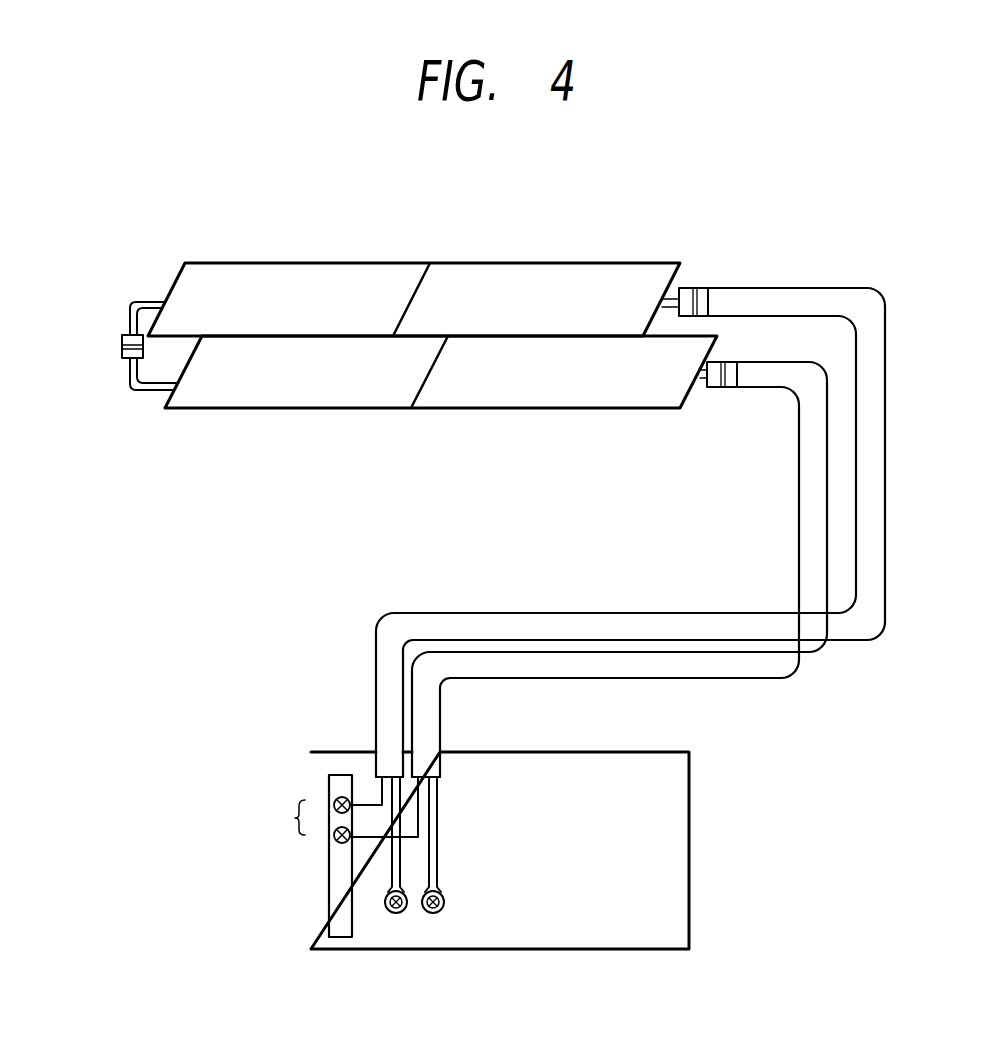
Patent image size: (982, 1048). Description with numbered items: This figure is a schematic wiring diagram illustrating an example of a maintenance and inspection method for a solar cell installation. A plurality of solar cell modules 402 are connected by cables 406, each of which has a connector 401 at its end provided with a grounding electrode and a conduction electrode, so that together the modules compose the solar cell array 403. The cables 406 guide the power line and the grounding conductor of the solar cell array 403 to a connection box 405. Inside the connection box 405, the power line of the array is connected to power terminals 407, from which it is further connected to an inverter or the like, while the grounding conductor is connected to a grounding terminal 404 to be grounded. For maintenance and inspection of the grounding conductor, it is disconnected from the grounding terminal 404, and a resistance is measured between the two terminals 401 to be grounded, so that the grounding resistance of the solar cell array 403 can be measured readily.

The connector 401 is at (122, 342).
The solar cell module 402 is at (480, 263).
The solar cell array 403 is at (415, 457).
The grounding terminal 404 is at (342, 932).
The connection box 405 is at (683, 815).
The cable 406 is at (132, 390).
The power terminal 407 is at (404, 910).